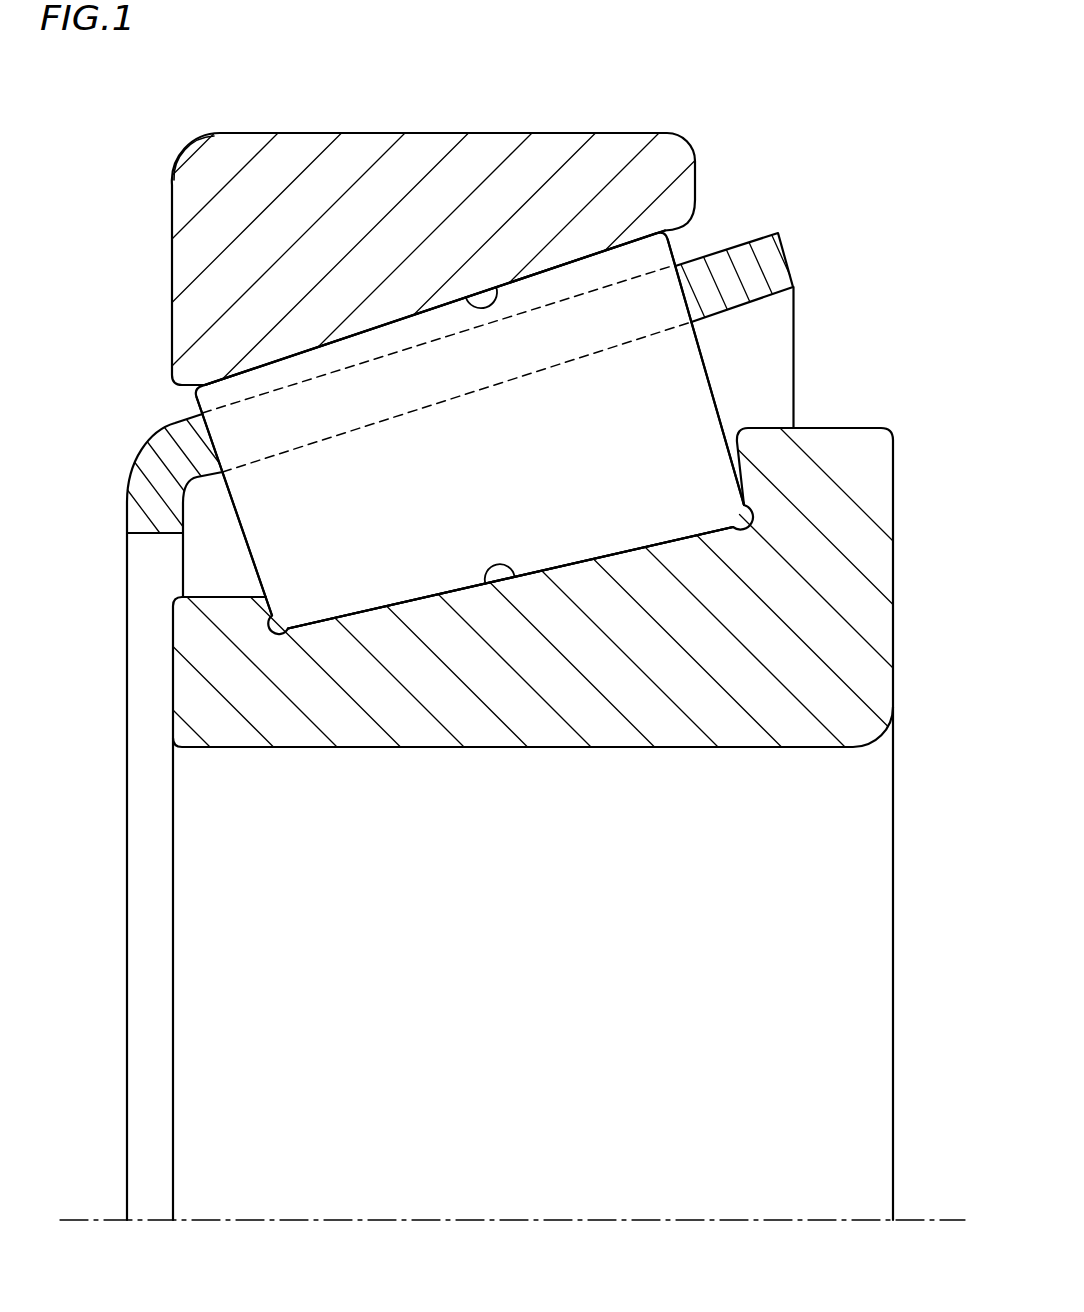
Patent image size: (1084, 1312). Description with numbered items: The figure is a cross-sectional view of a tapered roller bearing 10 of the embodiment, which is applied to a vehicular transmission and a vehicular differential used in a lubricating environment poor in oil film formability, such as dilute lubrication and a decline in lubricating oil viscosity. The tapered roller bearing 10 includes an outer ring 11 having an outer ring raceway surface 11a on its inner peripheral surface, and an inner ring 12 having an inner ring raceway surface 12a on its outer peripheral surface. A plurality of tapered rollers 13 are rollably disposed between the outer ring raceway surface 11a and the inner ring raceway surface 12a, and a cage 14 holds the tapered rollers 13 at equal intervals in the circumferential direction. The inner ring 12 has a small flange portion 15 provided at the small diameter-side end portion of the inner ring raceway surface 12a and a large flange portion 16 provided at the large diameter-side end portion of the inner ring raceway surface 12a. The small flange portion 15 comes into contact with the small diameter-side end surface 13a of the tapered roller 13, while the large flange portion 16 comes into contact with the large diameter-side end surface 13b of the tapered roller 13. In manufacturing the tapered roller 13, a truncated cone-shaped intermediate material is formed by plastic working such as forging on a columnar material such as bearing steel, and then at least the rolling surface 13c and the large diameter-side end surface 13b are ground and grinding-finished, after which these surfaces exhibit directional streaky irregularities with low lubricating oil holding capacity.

The tapered roller bearing 10 is at (741, 190).
The outer ring 11 is at (365, 217).
The outer ring raceway surface 11a is at (488, 288).
The inner ring 12 is at (805, 724).
The inner ring raceway surface 12a is at (488, 575).
The tapered roller 13 is at (573, 543).
The small diameter-side end surface 13a is at (242, 543).
The large diameter-side end surface 13b is at (703, 358).
The rolling surface 13c is at (680, 540).
The cage 14 is at (780, 232).
The small flange portion 15 is at (232, 617).
The large flange portion 16 is at (807, 467).